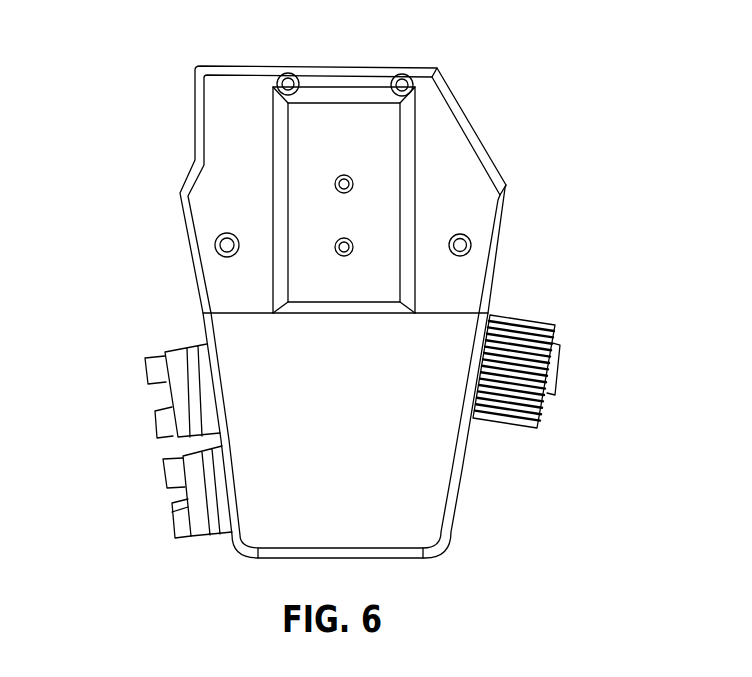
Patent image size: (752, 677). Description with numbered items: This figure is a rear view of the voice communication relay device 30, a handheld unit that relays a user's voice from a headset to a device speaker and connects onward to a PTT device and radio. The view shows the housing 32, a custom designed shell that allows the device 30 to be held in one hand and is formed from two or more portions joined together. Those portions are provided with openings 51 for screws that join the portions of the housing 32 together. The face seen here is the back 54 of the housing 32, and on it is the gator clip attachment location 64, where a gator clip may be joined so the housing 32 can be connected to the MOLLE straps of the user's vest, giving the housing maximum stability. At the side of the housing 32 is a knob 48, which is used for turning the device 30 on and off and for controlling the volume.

The voice communication relay device 30 is at (541, 126).
The housing 32 is at (460, 285).
The knob 48 is at (523, 428).
The openings 51 is at (462, 234).
The back 54 is at (322, 425).
The gator clip attachment location 64 is at (313, 163).